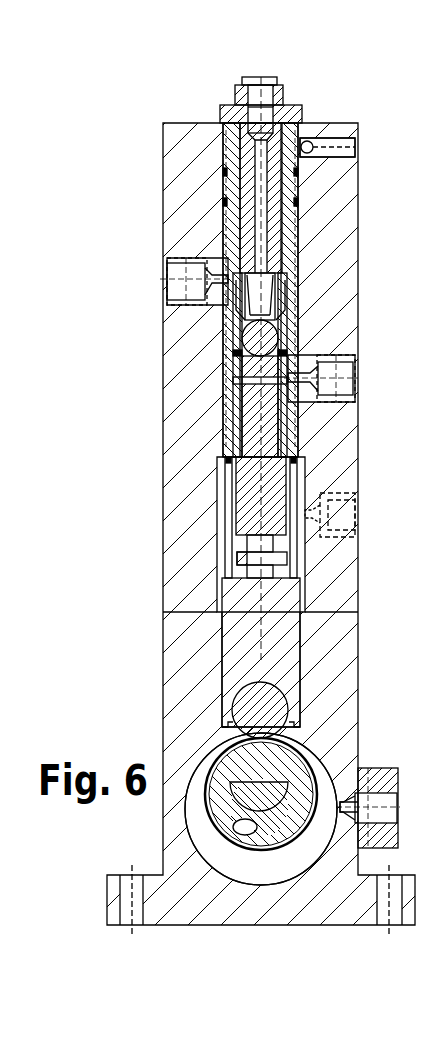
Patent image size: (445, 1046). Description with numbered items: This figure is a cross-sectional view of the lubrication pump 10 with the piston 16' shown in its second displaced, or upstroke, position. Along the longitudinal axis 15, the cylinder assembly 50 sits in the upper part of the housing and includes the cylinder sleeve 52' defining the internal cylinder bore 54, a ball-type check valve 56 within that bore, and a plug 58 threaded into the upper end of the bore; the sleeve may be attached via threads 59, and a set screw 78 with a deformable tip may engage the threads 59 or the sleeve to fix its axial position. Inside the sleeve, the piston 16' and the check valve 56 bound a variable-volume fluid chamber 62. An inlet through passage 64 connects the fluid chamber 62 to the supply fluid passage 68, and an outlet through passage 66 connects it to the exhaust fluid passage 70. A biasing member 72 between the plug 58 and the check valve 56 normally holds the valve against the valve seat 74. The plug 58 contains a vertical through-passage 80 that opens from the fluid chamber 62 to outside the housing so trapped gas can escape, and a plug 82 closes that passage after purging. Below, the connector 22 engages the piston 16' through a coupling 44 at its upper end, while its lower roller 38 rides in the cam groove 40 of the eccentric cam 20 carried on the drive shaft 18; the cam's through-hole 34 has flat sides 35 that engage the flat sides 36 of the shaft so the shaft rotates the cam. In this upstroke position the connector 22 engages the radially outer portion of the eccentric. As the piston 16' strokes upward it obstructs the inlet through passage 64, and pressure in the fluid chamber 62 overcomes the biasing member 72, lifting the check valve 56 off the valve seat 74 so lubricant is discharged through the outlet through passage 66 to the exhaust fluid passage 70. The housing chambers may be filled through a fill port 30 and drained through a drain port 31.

The lubrication pump 10 is at (130, 102).
The longitudinal axis 15 is at (261, 76).
The piston 16' is at (203, 520).
The drive shaft 18 is at (308, 840).
The eccentric cam 20 is at (293, 765).
The connector 22 is at (253, 648).
The fill port 30 is at (337, 505).
The drain port 31 is at (380, 800).
The through-hole 34 is at (227, 778).
The flat sides 35 is at (240, 835).
The flat sides 36 is at (262, 840).
The roller 38 is at (253, 705).
The cam groove 40 is at (200, 825).
The coupling 44 is at (280, 560).
The cylinder assembly 50 is at (220, 100).
The cylinder sleeve 52' is at (203, 517).
The internal cylinder bore 54 is at (284, 473).
The check valve 56 is at (270, 337).
The plug 58 is at (272, 158).
The threads 59 is at (228, 160).
The fluid chamber 62 is at (262, 363).
The inlet through passage 64 is at (278, 385).
The outlet through passage 66 is at (237, 292).
The supply fluid passage 68 is at (340, 373).
The exhaust fluid passage 70 is at (178, 272).
The biasing member 72 is at (273, 310).
The valve seat 74 is at (233, 353).
The set screw 78 is at (350, 150).
The through-passage 80 is at (262, 197).
The plug 82 is at (273, 80).